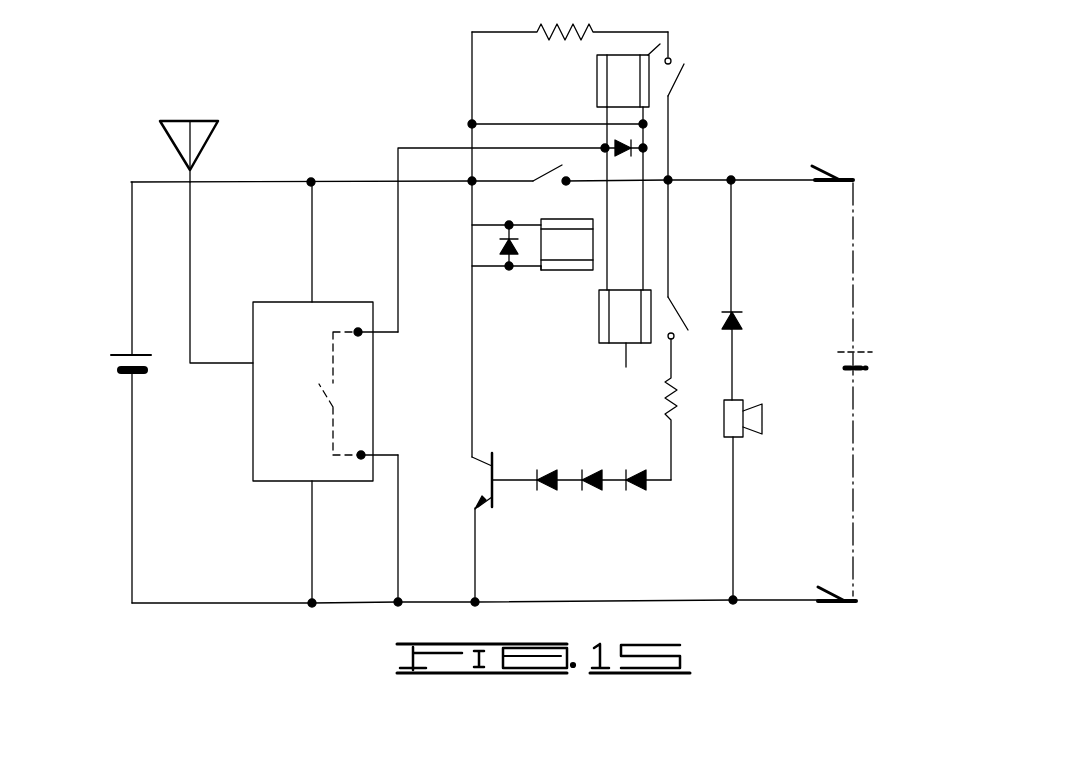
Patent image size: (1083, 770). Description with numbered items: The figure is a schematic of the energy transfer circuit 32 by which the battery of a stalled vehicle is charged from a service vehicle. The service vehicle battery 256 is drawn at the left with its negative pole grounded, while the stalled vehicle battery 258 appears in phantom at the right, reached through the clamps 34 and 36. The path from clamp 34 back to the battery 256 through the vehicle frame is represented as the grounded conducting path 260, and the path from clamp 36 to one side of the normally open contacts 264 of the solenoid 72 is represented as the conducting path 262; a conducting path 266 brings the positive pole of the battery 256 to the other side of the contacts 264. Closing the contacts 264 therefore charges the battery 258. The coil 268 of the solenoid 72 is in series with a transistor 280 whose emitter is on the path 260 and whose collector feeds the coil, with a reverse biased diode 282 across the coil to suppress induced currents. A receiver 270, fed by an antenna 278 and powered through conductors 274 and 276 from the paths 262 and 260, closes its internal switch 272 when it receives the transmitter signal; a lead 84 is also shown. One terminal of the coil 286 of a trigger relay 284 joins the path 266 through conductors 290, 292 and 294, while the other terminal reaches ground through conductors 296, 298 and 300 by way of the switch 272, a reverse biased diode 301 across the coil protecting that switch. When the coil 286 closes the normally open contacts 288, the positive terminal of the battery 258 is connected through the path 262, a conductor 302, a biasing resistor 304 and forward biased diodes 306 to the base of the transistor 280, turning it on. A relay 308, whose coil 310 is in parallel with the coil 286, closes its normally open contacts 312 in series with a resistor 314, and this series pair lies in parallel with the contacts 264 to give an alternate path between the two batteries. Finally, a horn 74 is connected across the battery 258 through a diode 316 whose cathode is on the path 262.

The energy transfer circuit 32 is at (791, 135).
The clamp 34 is at (847, 604).
The clamp 36 is at (840, 171).
The solenoid 72 is at (540, 282).
The horn 74 is at (737, 402).
The lead 84 is at (480, 0).
The service vehicle battery 256 is at (125, 353).
The stalled vehicle battery 258 is at (861, 348).
The conducting path 260 is at (560, 604).
The conducting path 262 is at (689, 179).
The normally open contacts 264 is at (548, 167).
The conducting path 266 is at (222, 181).
The coil 268 is at (565, 238).
The receiver 270 is at (314, 320).
The normally open switch 272 is at (340, 390).
The conductor 274 is at (311, 263).
The conductor 276 is at (313, 522).
The antenna 278 is at (191, 236).
The transistor 280 is at (492, 455).
The diode 282 is at (497, 243).
The trigger relay 284 is at (600, 352).
The coil 286 is at (626, 367).
The normally open contacts 288 is at (677, 310).
The conductor 290 is at (643, 258).
The conductor 292 is at (567, 124).
The conductor 294 is at (471, 160).
The conductor 296 is at (603, 284).
The conductor 298 is at (410, 148).
The conductor 300 is at (399, 518).
The diode 301 is at (625, 146).
The conductor 302 is at (668, 215).
The biasing resistor 304 is at (672, 408).
The diodes 306 is at (547, 492).
The relay 308 is at (655, 42).
The coil 310 is at (620, 68).
The normally open contacts 312 is at (684, 64).
The resistor 314 is at (548, 30).
The diode 316 is at (744, 322).